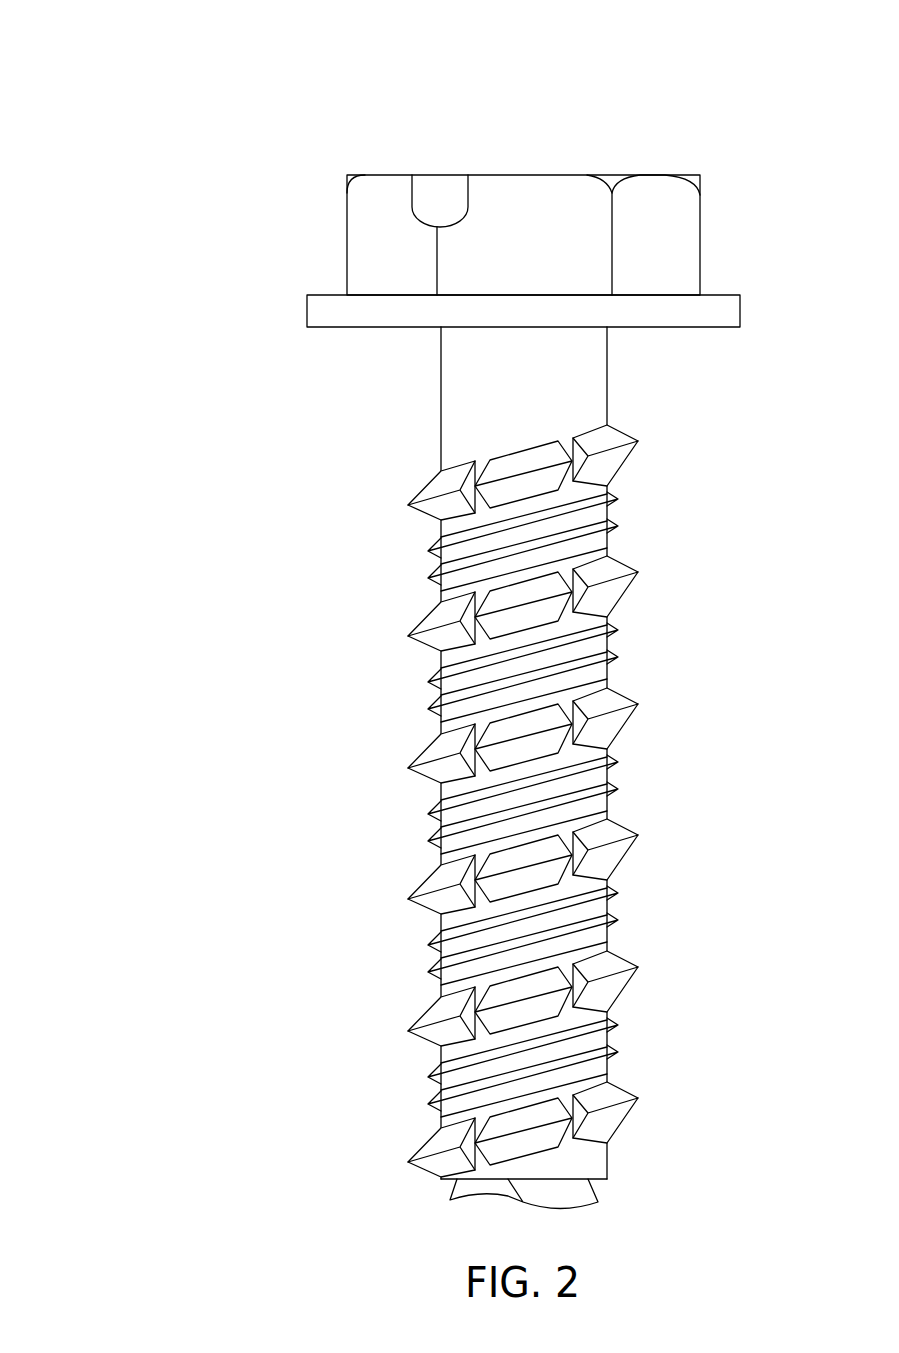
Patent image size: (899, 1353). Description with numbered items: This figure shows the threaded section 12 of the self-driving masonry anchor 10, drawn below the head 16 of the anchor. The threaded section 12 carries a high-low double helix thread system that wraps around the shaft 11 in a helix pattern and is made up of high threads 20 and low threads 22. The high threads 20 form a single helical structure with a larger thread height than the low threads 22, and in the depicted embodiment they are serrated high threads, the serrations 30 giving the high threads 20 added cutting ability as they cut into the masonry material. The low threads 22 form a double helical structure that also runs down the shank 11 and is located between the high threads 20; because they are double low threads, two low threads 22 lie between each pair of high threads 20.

The self-driving masonry anchor 10 is at (120, 52).
The shaft 11 is at (465, 384).
The threaded section 12 is at (443, 817).
The head 16 is at (670, 160).
The high threads 20 is at (612, 700).
The low threads 22 is at (612, 513).
The serrations 30 is at (560, 430).